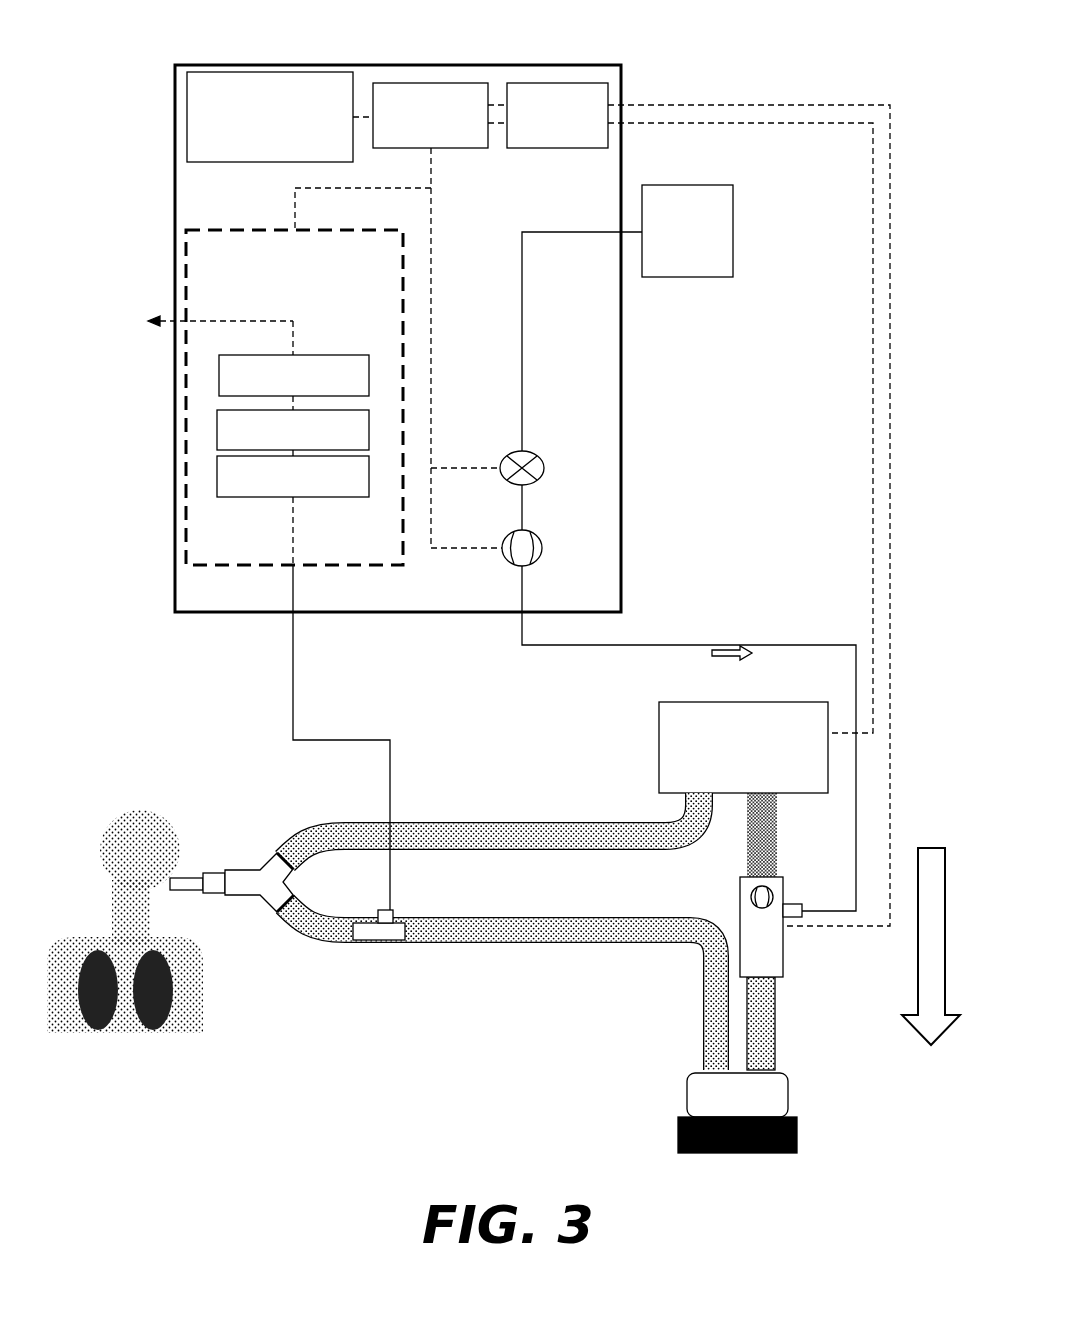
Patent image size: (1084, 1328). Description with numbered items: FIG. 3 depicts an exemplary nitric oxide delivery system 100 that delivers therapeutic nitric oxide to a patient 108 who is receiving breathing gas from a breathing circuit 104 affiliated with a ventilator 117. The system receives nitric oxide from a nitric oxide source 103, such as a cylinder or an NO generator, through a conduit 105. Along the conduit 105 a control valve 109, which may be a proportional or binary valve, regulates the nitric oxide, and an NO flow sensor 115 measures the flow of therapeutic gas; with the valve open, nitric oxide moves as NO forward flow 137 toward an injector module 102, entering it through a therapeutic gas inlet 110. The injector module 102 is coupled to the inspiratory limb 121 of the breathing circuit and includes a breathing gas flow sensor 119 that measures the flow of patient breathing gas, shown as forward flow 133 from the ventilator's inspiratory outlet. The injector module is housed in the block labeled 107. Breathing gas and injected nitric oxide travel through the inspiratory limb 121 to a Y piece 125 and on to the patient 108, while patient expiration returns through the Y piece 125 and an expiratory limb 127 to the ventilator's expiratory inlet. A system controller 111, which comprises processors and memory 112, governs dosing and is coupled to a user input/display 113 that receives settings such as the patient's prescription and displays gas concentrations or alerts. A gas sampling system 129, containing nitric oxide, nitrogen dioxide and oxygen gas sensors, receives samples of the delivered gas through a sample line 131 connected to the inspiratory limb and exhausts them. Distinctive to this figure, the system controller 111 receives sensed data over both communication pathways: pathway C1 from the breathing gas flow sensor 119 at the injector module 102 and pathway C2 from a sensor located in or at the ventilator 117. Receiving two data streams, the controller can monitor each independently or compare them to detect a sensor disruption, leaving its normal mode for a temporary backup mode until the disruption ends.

The nitric oxide delivery system 100 is at (313, 45).
The user input/display 113 is at (270, 117).
The system controller 111 is at (430, 115).
The memory 112 is at (557, 115).
The nitric oxide source 103 is at (687, 231).
The gas sampling system 129 is at (233, 397).
The conduit 105 is at (523, 360).
The control valve 109 is at (544, 466).
The NO flow sensor 115 is at (543, 548).
The NO forward flow 137 is at (712, 653).
The ventilator 117 is at (743, 747).
The breathing circuit 104 is at (304, 795).
The sample line 131 is at (388, 800).
The expiratory limb 127 is at (483, 830).
The patient 108 is at (112, 833).
The Y piece 125 is at (248, 875).
The injector module 102 is at (382, 933).
The inspiratory limb 121 is at (477, 941).
The breathing gas flow sensor 119 is at (752, 891).
The therapeutic gas inlet 110 is at (795, 903).
The injector module 107 is at (783, 960).
The forward flow 133 is at (936, 846).
The communication pathway C1 is at (888, 342).
The communication pathway C2 is at (873, 402).